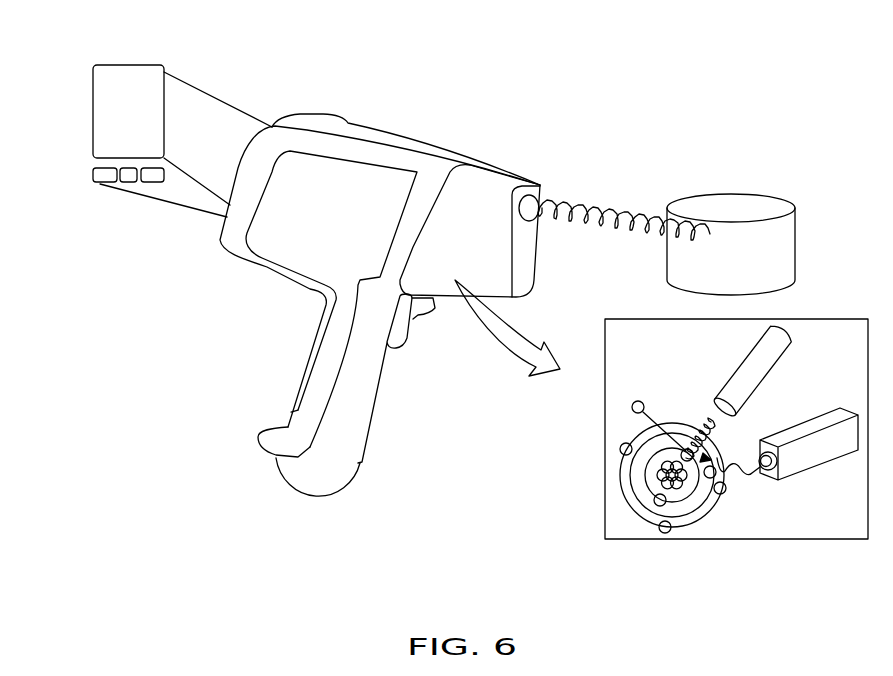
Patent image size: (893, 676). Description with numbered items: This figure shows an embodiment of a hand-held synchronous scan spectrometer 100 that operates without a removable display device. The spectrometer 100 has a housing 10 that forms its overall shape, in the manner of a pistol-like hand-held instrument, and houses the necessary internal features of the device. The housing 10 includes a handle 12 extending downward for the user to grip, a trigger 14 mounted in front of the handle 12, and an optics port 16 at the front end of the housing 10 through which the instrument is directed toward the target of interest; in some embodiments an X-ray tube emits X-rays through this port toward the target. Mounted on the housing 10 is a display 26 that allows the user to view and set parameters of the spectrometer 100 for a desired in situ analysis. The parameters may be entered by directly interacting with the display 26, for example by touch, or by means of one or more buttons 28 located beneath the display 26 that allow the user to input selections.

The hand-held synchronous scan spectrometer 100 is at (613, 88).
The housing 10 is at (233, 295).
The handle 12 is at (370, 413).
The trigger 14 is at (405, 346).
The optics port 16 is at (543, 203).
The display 26 is at (93, 118).
The buttons 28 is at (97, 184).